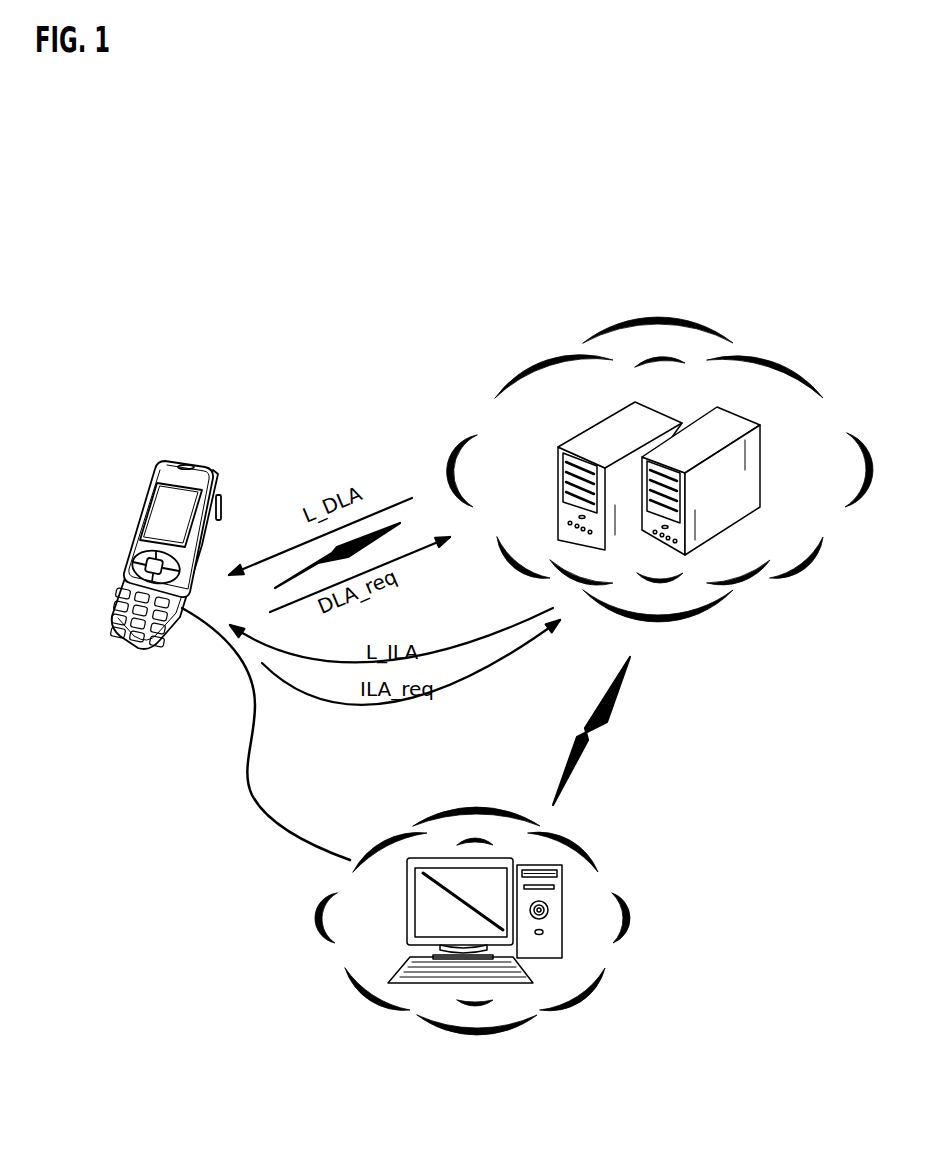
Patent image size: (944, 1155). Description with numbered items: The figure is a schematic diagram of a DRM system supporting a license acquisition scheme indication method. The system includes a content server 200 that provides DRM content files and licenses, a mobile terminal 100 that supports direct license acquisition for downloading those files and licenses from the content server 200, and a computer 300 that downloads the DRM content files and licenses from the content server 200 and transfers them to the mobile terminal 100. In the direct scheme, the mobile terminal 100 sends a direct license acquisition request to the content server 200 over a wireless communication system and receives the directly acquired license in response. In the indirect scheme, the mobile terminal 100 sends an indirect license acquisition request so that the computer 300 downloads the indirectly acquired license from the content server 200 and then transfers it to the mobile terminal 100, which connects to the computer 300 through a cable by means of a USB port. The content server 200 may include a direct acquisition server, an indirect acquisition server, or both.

The mobile terminal 100 is at (207, 460).
The content server 200 is at (657, 316).
The computer 300 is at (473, 1037).